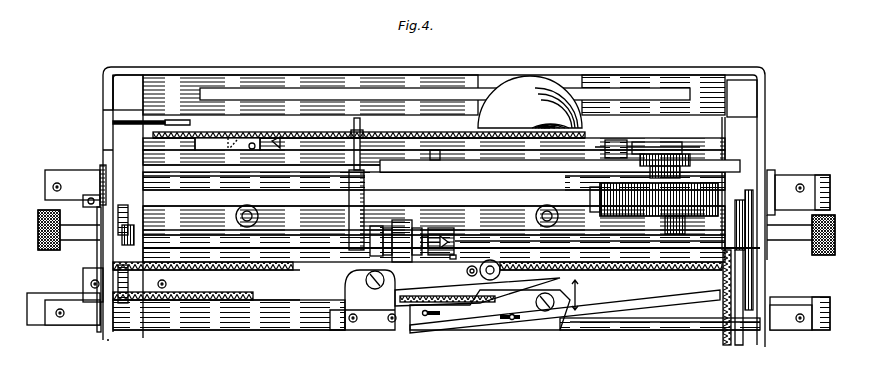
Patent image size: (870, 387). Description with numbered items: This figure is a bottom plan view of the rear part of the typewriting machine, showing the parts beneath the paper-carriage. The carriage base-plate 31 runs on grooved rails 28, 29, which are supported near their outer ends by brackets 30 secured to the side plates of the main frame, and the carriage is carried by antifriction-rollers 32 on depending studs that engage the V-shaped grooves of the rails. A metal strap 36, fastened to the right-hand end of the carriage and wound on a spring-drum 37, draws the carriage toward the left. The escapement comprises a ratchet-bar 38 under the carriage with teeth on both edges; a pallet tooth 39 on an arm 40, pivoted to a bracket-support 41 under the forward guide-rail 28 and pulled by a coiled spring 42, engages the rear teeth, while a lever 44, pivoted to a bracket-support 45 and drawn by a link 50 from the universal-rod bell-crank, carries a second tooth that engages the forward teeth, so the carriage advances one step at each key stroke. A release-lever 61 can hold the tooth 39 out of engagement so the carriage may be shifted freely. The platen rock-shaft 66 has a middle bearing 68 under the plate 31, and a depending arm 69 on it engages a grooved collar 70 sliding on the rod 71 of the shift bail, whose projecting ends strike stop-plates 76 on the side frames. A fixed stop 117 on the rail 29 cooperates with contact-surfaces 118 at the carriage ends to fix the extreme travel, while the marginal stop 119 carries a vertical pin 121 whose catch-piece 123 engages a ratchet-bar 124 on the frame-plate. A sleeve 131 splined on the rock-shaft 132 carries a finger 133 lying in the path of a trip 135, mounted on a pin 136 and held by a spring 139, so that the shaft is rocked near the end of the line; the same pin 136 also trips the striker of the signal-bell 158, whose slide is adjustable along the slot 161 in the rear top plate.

The contact-surfaces 118 is at (740, 172).
The ratchet-bar 124 is at (185, 132).
The catch-piece 123 is at (217, 146).
The vertical pin 121 is at (270, 133).
The marginal stop 119 is at (303, 140).
The pin 136 is at (365, 140).
The signal-bell 158 is at (530, 102).
The slot or guideway 161 is at (588, 92).
The sleeve 131 is at (608, 144).
The rock-shaft 132 is at (645, 142).
The rail 29 is at (843, 162).
The brackets 30 is at (778, 320).
The stop-plates 76 is at (752, 262).
The fixed stop 117 is at (465, 172).
The trip 135 is at (382, 218).
The arm 69 is at (397, 220).
The collar 70 is at (418, 228).
The middle bearing 68 is at (448, 228).
The metal strap 36 is at (495, 215).
The finger 133 is at (560, 235).
The spring 139 is at (349, 205).
The rock-shaft 66 is at (628, 232).
The spring-drum 37 is at (676, 218).
The release-lever 61 is at (785, 212).
The base-plate 31 is at (285, 262).
The rod 71 is at (718, 245).
The antifriction-rollers 32 is at (545, 230).
The ratchet-bar 38 is at (216, 288).
The guide-rail 28 is at (822, 322).
The arm or lever 40 is at (477, 288).
The pallet tooth or dog 39 is at (483, 265).
The coiled spring 42 is at (372, 296).
The bracket-support 41 is at (378, 322).
The bracket-support 45 is at (490, 310).
The lever 44 is at (565, 306).
The link 50 is at (740, 318).